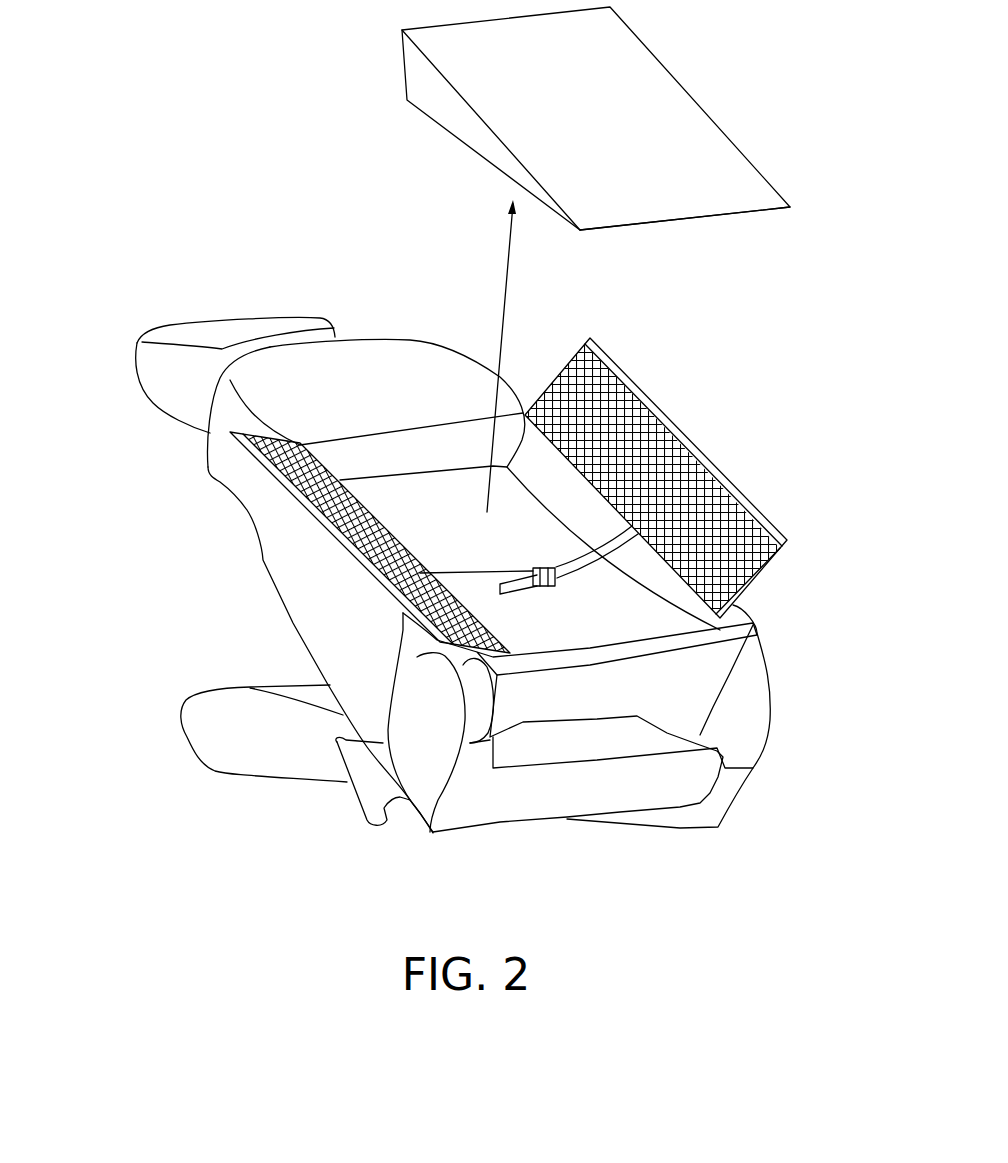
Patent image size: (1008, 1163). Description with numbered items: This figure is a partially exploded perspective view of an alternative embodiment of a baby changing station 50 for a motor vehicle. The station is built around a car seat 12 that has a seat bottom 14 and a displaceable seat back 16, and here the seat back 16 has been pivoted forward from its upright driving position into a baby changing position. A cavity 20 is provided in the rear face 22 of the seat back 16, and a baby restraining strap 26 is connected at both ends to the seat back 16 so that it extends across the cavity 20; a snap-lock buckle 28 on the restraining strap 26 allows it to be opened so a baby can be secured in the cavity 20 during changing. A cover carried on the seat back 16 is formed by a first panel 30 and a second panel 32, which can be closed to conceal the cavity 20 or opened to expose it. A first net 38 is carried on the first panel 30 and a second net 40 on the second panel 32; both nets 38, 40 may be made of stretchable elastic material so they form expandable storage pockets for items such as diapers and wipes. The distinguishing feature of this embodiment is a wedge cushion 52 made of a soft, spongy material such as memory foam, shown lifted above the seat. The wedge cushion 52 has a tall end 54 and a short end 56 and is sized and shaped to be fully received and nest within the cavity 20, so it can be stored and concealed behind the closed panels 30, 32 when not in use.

The car seat 12 is at (175, 750).
The seat bottom 14 is at (263, 752).
The seat back 16 is at (330, 615).
The cavity 20 is at (415, 493).
The rear face 22 is at (371, 365).
The restraining strap 26 is at (580, 563).
The snap-lock buckle 28 is at (550, 586).
The first panel 30 is at (318, 548).
The second panel 32 is at (683, 435).
The first net 38 is at (247, 452).
The second net 40 is at (738, 574).
The baby changing station 50 is at (170, 268).
The wedge cushion 52 is at (668, 112).
The tall end 54 is at (403, 77).
The short end 56 is at (695, 218).